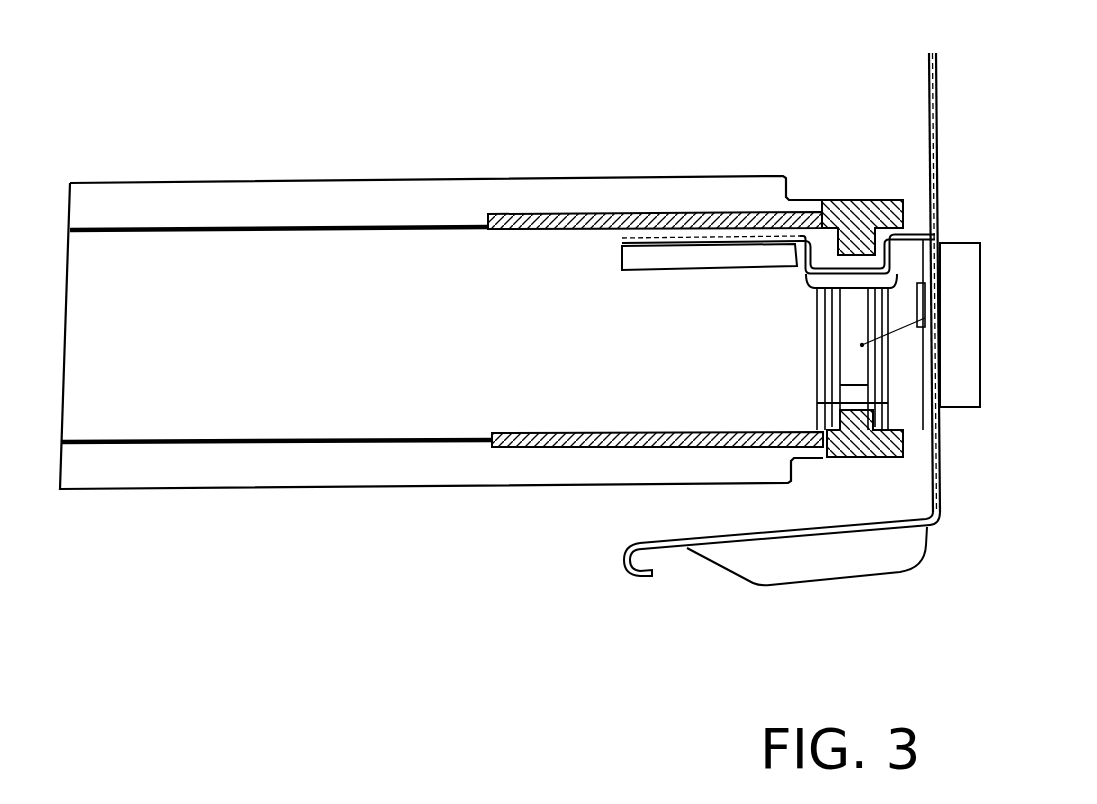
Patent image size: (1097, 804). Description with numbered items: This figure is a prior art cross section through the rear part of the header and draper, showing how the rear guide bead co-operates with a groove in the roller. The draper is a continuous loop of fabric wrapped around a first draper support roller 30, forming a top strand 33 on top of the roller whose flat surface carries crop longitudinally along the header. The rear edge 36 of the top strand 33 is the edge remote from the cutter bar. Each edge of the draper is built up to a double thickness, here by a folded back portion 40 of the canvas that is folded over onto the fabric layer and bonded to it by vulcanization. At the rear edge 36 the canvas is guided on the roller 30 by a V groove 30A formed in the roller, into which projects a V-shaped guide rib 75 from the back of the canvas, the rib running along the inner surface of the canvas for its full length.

The first draper support roller 30 is at (418, 370).
The V groove 30A is at (922, 318).
The top strand 33 is at (577, 214).
The rear edge 36 is at (906, 200).
The folded back portion 40 is at (745, 214).
The V-shaped guide rib 75 is at (797, 262).